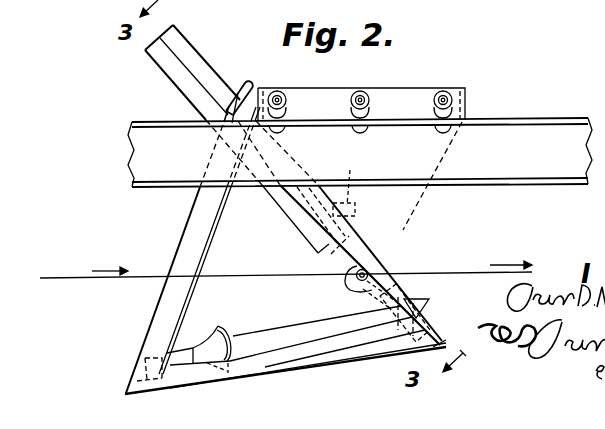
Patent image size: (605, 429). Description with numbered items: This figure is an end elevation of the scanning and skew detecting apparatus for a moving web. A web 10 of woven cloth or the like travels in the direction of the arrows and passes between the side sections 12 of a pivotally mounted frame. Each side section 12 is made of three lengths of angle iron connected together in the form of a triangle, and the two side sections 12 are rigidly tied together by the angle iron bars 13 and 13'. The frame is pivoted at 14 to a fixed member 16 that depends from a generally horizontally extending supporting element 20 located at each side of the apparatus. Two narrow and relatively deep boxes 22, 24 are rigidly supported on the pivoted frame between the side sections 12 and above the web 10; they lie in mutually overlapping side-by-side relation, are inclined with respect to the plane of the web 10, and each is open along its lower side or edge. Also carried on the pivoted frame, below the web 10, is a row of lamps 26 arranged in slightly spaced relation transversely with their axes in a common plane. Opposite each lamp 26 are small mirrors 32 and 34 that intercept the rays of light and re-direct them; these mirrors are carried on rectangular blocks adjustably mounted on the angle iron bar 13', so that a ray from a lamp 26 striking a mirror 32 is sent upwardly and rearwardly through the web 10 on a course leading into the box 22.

The web of woven cloth 10 is at (464, 273).
The side section 12 is at (172, 240).
The angle iron bar 13 is at (294, 132).
The angle iron bar 13' is at (435, 310).
The pivot 14 is at (386, 271).
The fixed member 16 is at (403, 210).
The supporting element 20 is at (534, 121).
The box 22 is at (175, 79).
The box 24 is at (195, 62).
The lamp 26 is at (208, 337).
The mirror 32 is at (396, 335).
The mirror 34 is at (422, 299).